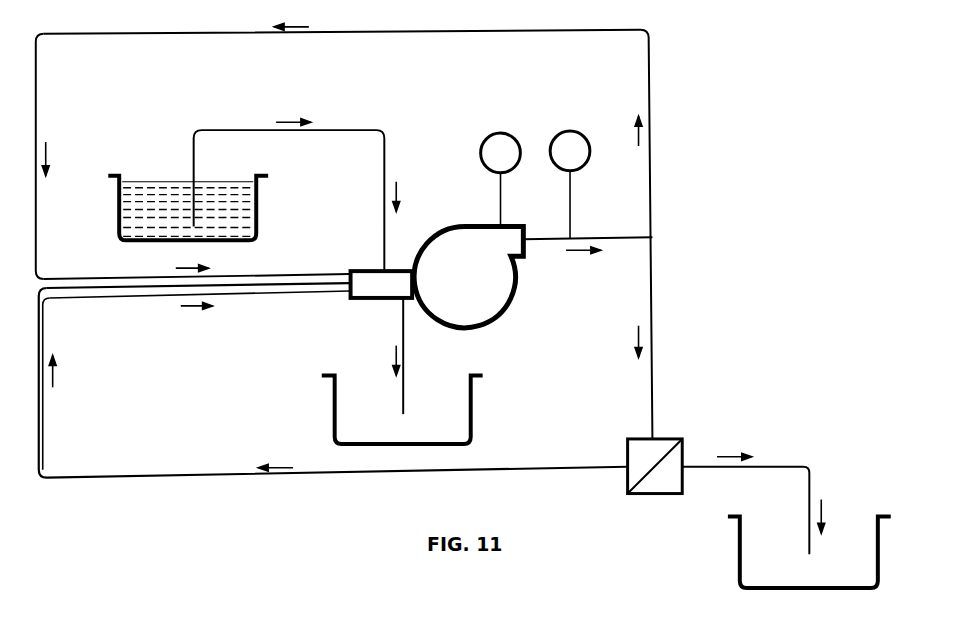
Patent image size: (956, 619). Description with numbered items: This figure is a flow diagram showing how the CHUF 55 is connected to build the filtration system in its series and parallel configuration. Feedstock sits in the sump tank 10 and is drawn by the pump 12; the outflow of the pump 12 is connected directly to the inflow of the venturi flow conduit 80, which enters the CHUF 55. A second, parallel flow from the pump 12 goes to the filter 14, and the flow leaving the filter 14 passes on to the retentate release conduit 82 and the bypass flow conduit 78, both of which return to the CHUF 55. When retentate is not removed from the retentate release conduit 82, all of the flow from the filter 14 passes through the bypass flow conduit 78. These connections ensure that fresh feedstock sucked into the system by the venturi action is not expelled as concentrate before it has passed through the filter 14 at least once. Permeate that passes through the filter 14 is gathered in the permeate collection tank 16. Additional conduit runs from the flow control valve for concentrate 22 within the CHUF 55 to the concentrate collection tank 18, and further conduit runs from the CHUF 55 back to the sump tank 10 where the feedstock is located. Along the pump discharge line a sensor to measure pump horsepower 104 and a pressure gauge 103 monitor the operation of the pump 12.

The sump tank 10 is at (256, 202).
The pump 12 is at (509, 298).
The filter 14 is at (681, 438).
The permeate collection tank 16 is at (737, 553).
The concentrate collection tank 18 is at (330, 388).
The flow control valve for concentrate 22 is at (404, 297).
The CHUF 55 is at (374, 265).
The bypass flow conduit 78 is at (305, 282).
The venturi flow conduit 80 is at (325, 268).
The retentate release conduit 82 is at (330, 293).
The pressure gauge 103 is at (580, 126).
The sensor to measure pump horsepower 104 is at (492, 129).